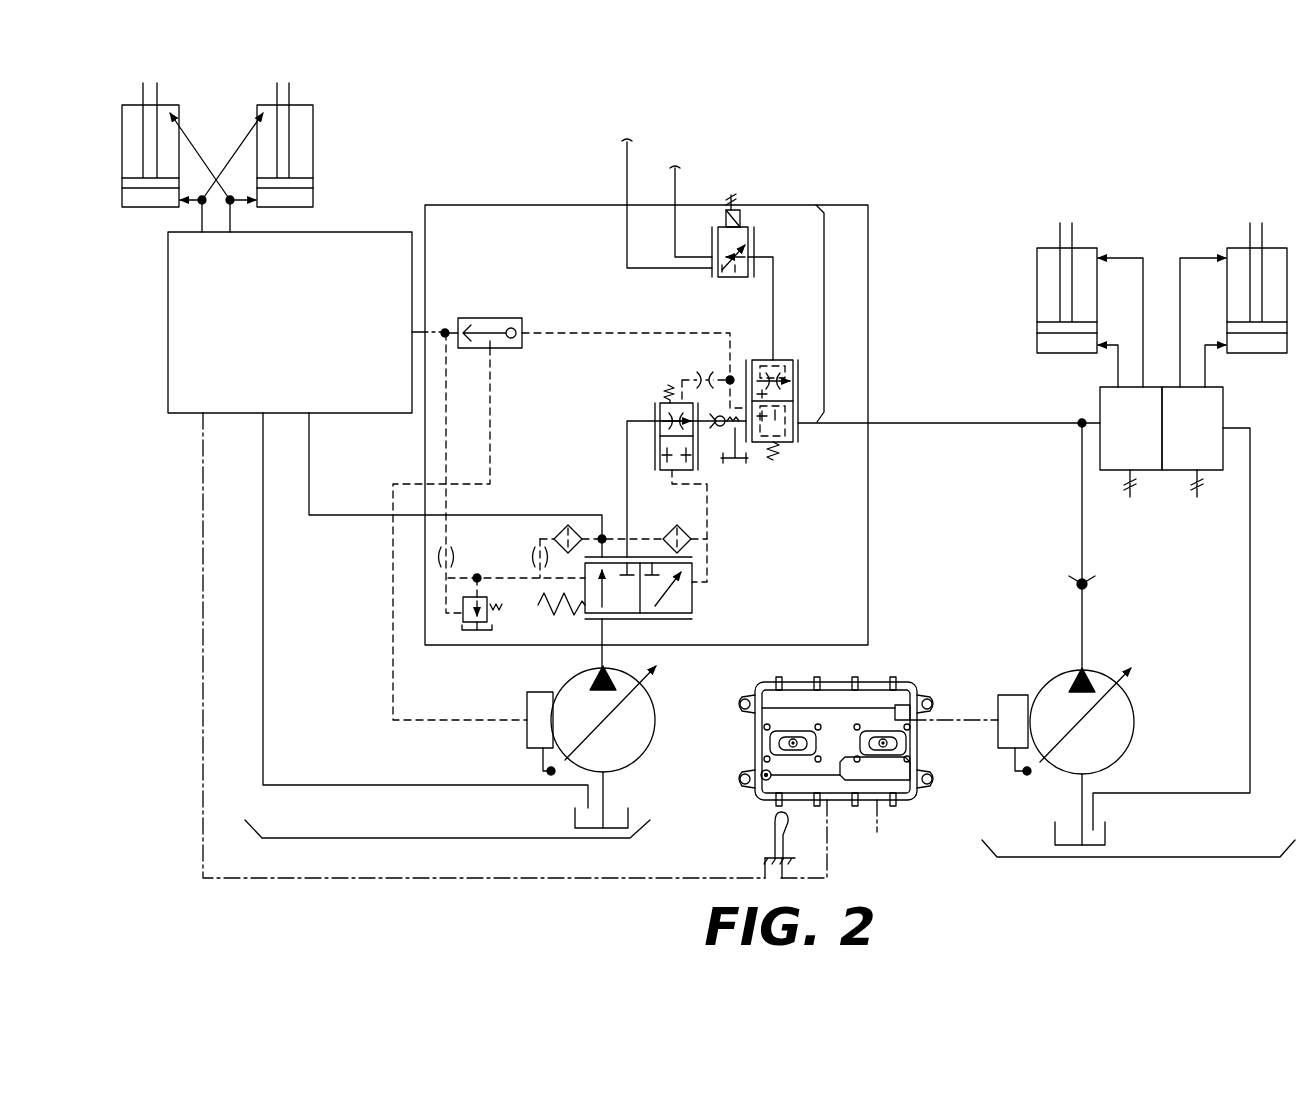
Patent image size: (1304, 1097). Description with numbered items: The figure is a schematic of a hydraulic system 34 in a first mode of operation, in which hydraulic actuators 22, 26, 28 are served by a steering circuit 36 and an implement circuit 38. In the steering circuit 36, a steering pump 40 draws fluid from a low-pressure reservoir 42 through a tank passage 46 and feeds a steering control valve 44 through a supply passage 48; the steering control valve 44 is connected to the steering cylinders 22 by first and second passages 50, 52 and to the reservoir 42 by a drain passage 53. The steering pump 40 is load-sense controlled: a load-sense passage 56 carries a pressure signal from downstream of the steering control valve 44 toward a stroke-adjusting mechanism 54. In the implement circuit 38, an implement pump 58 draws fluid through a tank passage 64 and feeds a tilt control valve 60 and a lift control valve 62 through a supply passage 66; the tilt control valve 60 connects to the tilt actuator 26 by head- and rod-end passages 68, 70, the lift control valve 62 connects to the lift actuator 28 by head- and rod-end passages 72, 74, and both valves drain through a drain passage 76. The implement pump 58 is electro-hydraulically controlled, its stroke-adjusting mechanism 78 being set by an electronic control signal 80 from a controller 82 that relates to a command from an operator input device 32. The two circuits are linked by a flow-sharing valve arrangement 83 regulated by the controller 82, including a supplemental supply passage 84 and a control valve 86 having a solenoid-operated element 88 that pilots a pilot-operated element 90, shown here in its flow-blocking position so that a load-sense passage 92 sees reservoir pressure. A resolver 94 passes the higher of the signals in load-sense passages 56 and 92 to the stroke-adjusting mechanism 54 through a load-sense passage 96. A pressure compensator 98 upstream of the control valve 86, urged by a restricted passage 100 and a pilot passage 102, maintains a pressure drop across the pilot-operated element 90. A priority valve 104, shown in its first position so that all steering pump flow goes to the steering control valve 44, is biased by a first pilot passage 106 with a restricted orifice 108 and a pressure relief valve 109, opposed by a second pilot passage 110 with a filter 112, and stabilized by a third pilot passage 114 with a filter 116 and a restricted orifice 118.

The hydraulic actuator 22 is at (250, 108).
The hydraulic actuator 26 is at (1038, 290).
The hydraulic actuator 28 is at (1268, 246).
The operator input device 32 is at (770, 843).
The hydraulic system 34 is at (1002, 206).
The steering circuit 36 is at (438, 838).
The implement circuit 38 is at (1138, 858).
The steering pump 40 is at (601, 720).
The low-pressure reservoir 42 is at (628, 816).
The steering control valve 44 is at (290, 322).
The tank passage 46 is at (612, 778).
The supply passage 48 is at (348, 513).
The first passage 50 is at (196, 210).
The second passage 52 is at (243, 210).
The drain passage 53 is at (263, 630).
The stroke-adjusting mechanism 54 is at (527, 738).
The load-sense passage 56 is at (446, 328).
The implement pump 58 is at (1078, 721).
The tilt control valve 60 is at (1131, 428).
The lift control valve 62 is at (1192, 428).
The tank passage 64 is at (1078, 792).
The supply passage 66 is at (1084, 632).
The head-end passage 68 is at (1110, 343).
The rod-end passage 70 is at (1106, 255).
The head-end passage 72 is at (1210, 343).
The rod-end passage 74 is at (1210, 255).
The drain passage 76 is at (1250, 694).
The stroke-adjusting mechanism 78 is at (1012, 694).
The electronic control signal 80 is at (958, 718).
The controller 82 is at (836, 777).
The flow-sharing valve arrangement 83 is at (868, 205).
The supplemental supply passage 84 is at (948, 420).
The control valve 86 is at (825, 312).
The solenoid-operated element 88 is at (735, 278).
The pilot-operated element 90 is at (786, 356).
The load-sense passage 92 is at (570, 331).
The resolver 94 is at (498, 316).
The load-sense passage 96 is at (491, 414).
The pressure compensator 98 is at (656, 405).
The restricted passage 100 is at (704, 374).
The pilot passage 102 is at (722, 472).
The priority valve 104 is at (694, 600).
The first pilot passage 106 is at (447, 415).
The restricted orifice 108 is at (455, 550).
The pressure relief valve 109 is at (500, 602).
The second pilot passage 110 is at (712, 562).
The filter 112 is at (678, 528).
The third pilot passage 114 is at (548, 536).
The filter 116 is at (570, 526).
The restricted orifice 118 is at (532, 562).